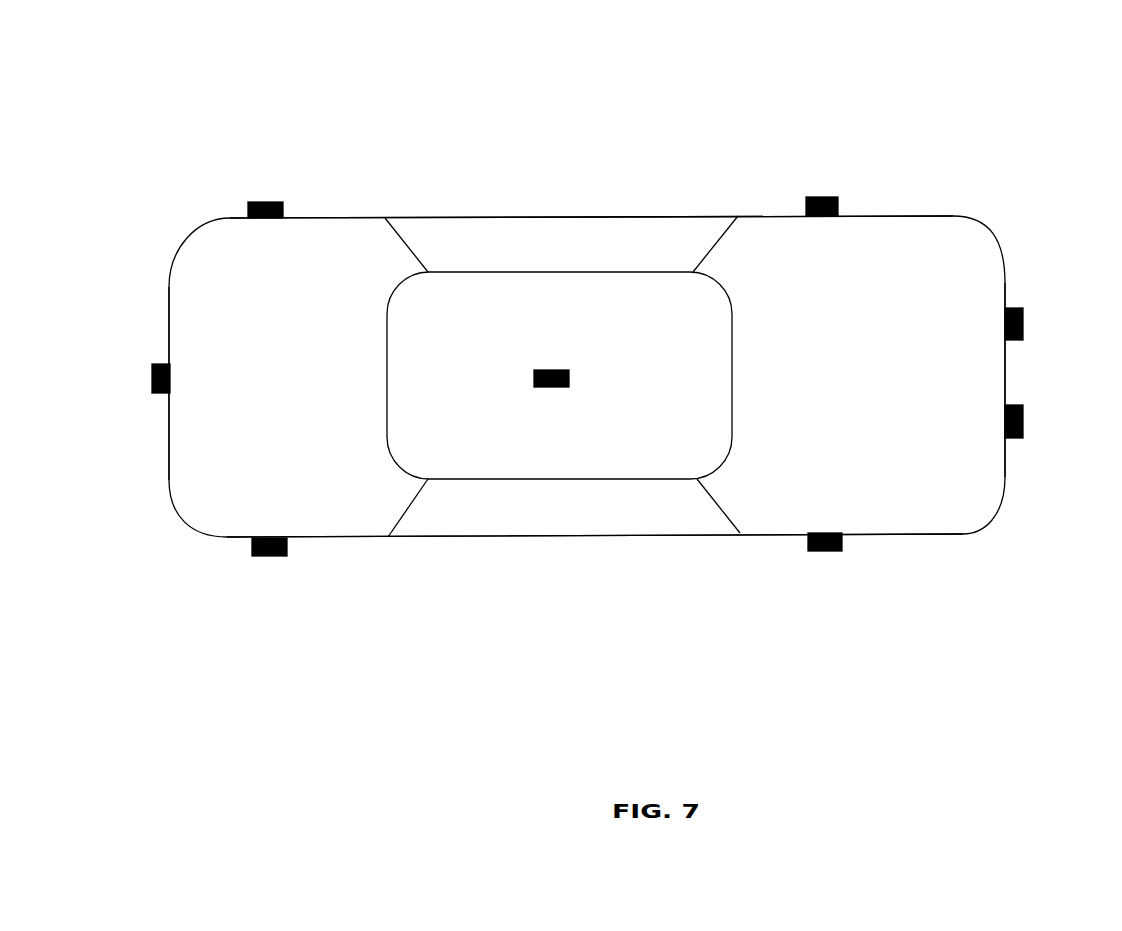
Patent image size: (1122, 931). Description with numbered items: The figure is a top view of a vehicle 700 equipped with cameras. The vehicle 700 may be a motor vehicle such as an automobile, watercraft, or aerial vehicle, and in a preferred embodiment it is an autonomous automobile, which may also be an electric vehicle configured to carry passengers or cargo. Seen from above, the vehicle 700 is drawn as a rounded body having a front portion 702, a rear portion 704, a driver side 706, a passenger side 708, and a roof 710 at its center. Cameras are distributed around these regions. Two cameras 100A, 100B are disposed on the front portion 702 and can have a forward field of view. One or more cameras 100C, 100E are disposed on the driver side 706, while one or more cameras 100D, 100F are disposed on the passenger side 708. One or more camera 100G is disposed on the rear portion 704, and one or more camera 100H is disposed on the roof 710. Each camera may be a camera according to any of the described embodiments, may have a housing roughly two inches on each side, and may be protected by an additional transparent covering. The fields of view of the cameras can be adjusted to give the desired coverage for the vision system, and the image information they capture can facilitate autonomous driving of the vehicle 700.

The vehicle 700 is at (975, 40).
The front portion 702 is at (1005, 372).
The rear portion 704 is at (169, 294).
The driver side 706 is at (580, 217).
The passenger side 708 is at (591, 535).
The roof 710 is at (456, 448).
The camera 100A is at (1024, 322).
The camera 100B is at (1024, 418).
The camera 100C is at (820, 196).
The camera 100D is at (826, 552).
The camera 100E is at (265, 201).
The camera 100F is at (268, 557).
The camera 100G is at (152, 382).
The camera 100H is at (550, 370).